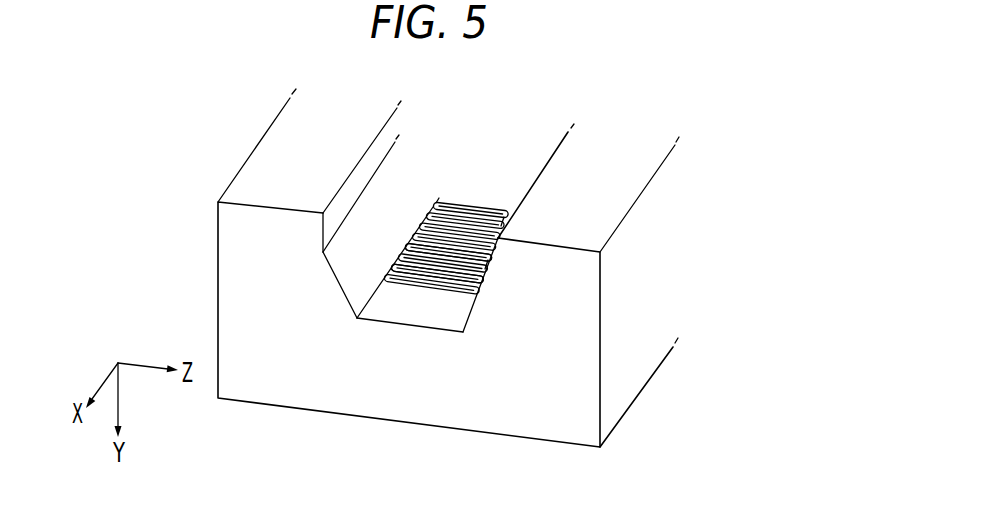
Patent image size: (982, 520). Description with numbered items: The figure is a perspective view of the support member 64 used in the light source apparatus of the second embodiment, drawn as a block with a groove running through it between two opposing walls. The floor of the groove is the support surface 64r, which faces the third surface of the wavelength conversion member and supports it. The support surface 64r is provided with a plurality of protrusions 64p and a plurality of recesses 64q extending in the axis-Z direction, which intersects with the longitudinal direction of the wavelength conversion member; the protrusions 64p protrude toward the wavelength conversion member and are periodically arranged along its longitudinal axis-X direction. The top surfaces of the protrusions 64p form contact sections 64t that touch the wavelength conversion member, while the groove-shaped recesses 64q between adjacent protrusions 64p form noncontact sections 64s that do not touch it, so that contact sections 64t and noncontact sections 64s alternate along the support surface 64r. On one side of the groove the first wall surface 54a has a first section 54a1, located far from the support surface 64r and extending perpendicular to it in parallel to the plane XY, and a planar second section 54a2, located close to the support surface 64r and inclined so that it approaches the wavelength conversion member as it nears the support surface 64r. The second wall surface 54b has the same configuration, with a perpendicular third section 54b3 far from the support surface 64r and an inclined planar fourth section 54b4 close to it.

The support member 64 is at (192, 165).
The protrusions 64p is at (423, 239).
The recesses 64q is at (409, 259).
The support surface 64r is at (476, 197).
The noncontact sections 64s is at (452, 265).
The contact sections 64t is at (455, 235).
The first wall surface 54a is at (361, 260).
The first section 54a1 is at (345, 273).
The second section 54a2 is at (368, 160).
The second wall surface 54b is at (538, 269).
The third section 54b3 is at (535, 177).
The fourth section 54b4 is at (460, 318).